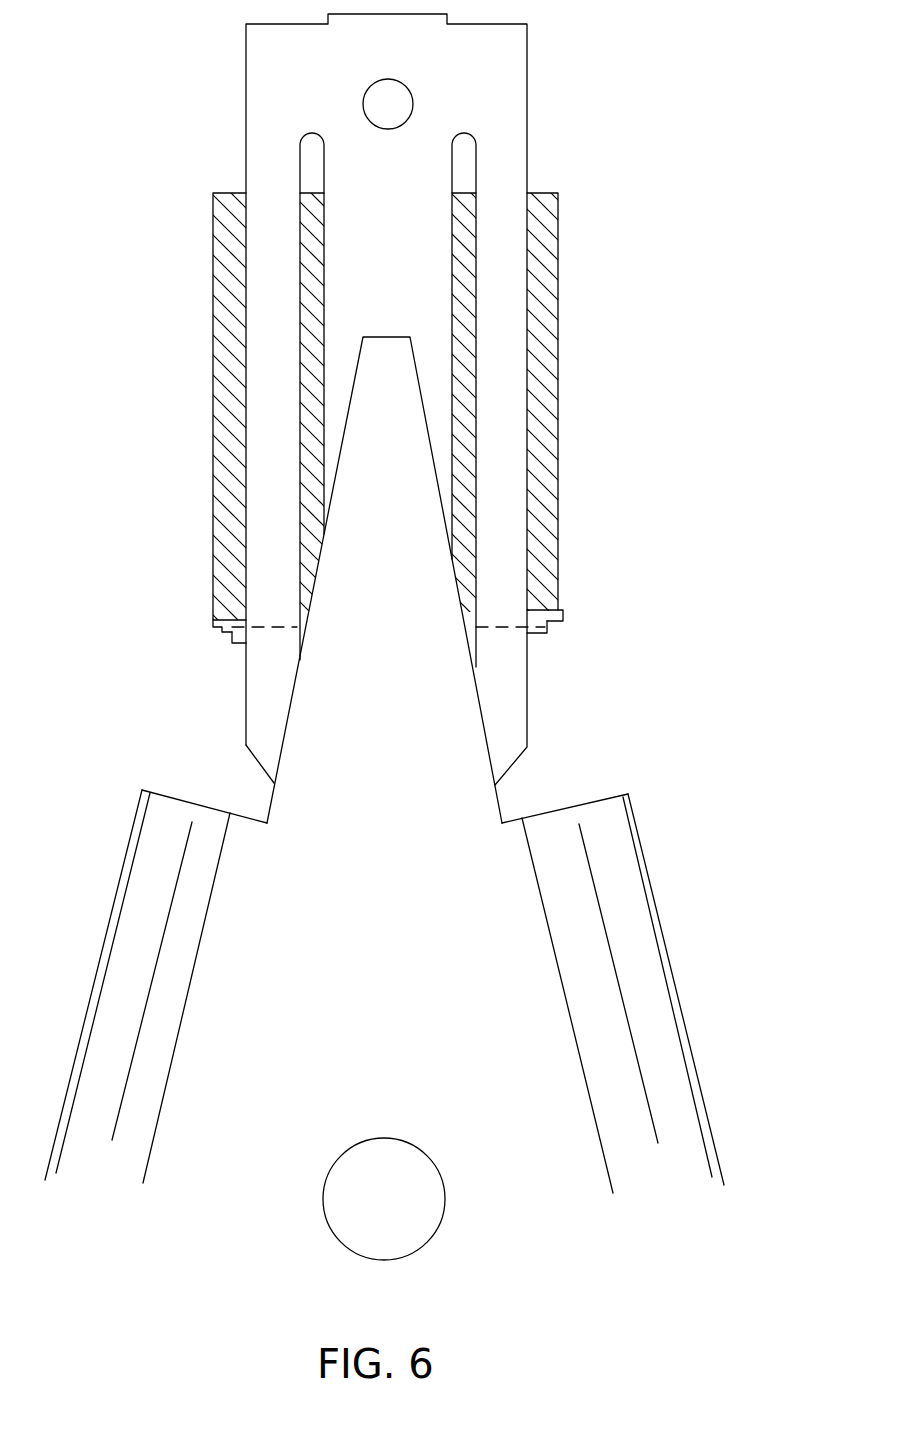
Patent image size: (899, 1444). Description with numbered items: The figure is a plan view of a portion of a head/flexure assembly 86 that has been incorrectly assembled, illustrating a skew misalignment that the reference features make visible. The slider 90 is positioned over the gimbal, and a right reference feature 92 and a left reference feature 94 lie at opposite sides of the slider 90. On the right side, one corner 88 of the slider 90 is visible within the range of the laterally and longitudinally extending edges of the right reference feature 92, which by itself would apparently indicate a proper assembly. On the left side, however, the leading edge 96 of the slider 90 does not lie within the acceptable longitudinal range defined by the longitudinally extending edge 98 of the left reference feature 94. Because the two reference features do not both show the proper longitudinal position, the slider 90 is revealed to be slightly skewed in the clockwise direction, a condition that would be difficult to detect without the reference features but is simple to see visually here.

The head/flexure assembly 86 is at (670, 172).
The slider 90 is at (560, 277).
The right reference feature 92 is at (563, 610).
The corner 88 is at (553, 622).
The longitudinally extending edge 98 is at (232, 640).
The left reference feature 94 is at (250, 635).
The leading edge 96 is at (297, 627).